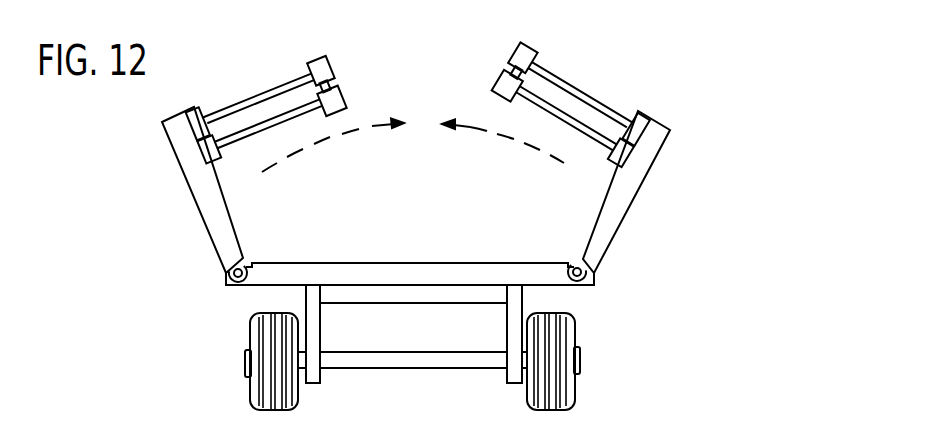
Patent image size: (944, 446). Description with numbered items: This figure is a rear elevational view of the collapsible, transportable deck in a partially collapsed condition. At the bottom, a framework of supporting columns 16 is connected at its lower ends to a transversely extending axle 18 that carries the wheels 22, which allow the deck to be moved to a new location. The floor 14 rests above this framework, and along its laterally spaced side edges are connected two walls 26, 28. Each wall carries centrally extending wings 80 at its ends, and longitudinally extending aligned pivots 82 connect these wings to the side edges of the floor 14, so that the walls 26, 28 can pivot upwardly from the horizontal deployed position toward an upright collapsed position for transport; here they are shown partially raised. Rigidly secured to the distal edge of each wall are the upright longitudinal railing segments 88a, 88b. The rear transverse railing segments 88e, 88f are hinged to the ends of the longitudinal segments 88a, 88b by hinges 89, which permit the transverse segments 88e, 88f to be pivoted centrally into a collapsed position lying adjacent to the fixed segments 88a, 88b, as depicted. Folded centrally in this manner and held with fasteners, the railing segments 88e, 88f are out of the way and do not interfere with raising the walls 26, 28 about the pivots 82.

The floor 14 is at (435, 263).
The supporting columns 16 is at (507, 312).
The axle 18 is at (372, 360).
The wheels 22 is at (253, 337).
The wall 26 is at (610, 188).
The wall 28 is at (215, 190).
The wings 80 is at (247, 273).
The pivots 82 is at (242, 260).
The longitudinal railing segment 88a is at (318, 62).
The longitudinal railing segment 88b is at (517, 47).
The transverse railing segment 88e is at (335, 92).
The transverse railing segment 88f is at (497, 80).
The hinges 89 is at (530, 223).